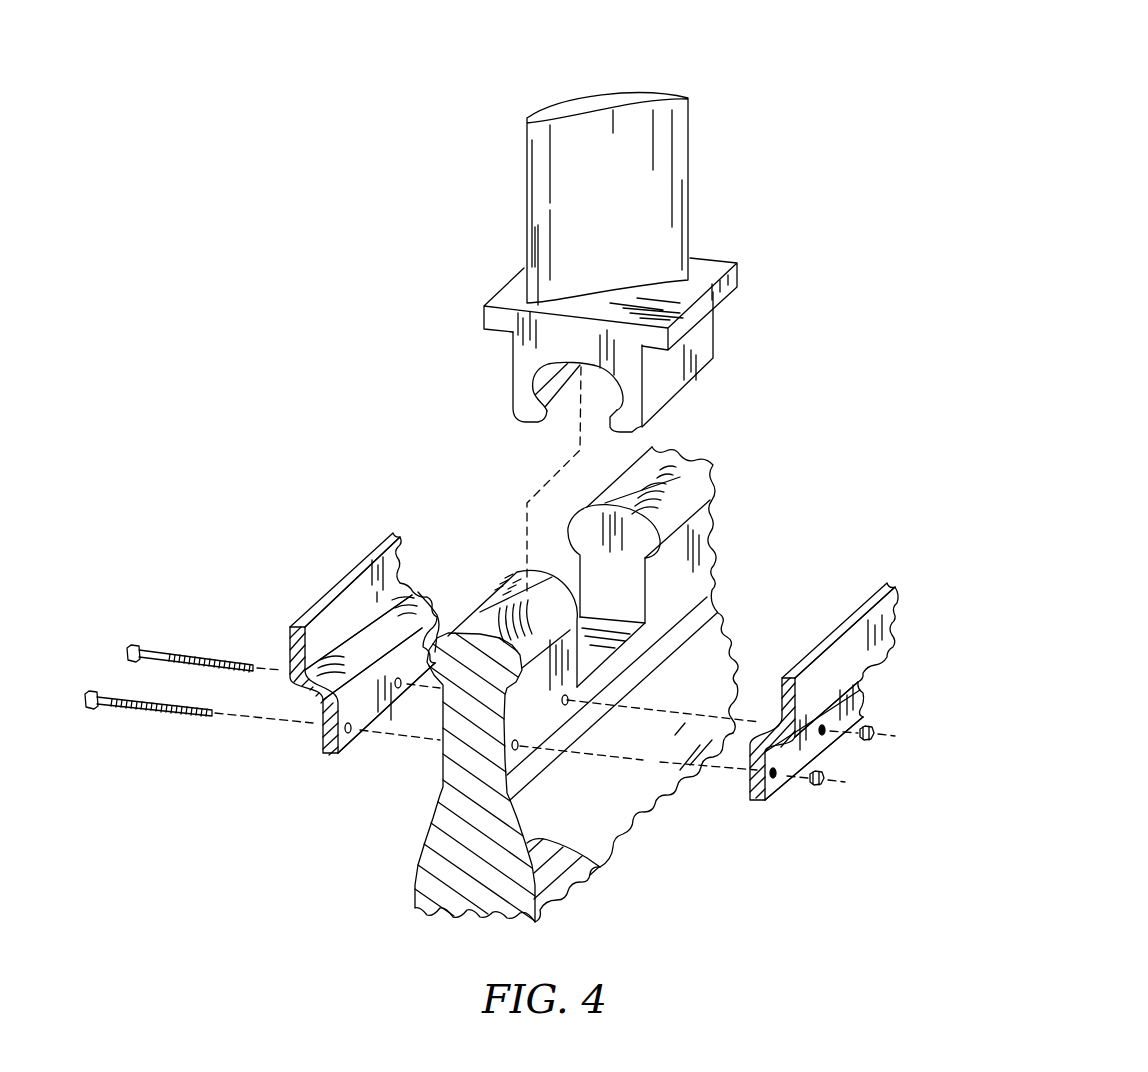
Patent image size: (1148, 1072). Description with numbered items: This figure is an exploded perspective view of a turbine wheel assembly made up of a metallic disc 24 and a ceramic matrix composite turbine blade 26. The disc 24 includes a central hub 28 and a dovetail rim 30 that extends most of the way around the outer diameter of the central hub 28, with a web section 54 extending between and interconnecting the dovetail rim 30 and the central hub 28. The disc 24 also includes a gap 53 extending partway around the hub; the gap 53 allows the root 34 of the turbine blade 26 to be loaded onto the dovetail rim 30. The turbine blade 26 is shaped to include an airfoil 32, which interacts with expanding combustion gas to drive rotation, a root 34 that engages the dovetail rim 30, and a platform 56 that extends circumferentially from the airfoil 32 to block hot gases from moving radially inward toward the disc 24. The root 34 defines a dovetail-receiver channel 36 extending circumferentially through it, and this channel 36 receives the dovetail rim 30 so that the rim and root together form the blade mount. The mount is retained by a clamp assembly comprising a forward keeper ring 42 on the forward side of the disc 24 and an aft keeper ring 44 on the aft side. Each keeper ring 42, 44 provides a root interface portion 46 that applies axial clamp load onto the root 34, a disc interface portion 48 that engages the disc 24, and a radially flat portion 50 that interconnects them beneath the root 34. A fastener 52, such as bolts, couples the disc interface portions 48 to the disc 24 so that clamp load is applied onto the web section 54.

The disc 24 is at (570, 757).
The turbine blade 26 is at (765, 146).
The central hub 28 is at (587, 857).
The dovetail rim 30 is at (590, 612).
The airfoil 32 is at (662, 133).
The root 34 is at (643, 366).
The dovetail-receiver channel 36 is at (605, 400).
The forward keeper ring 42 is at (367, 548).
The aft keeper ring 44 is at (878, 622).
The root interface portion 46 is at (289, 650).
The disc interface portion 48 is at (322, 738).
The radially flat portion 50 is at (315, 710).
The fastener 52 is at (87, 692).
The gap 53 is at (607, 583).
The web section 54 is at (507, 725).
The platform 56 is at (712, 294).